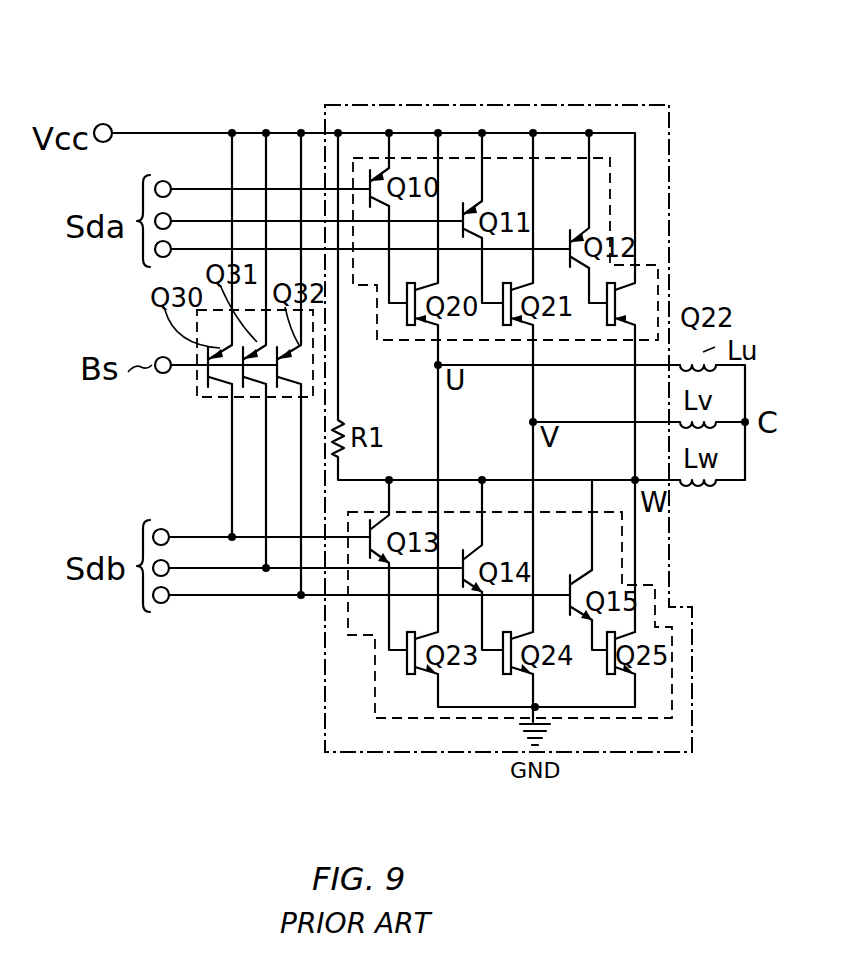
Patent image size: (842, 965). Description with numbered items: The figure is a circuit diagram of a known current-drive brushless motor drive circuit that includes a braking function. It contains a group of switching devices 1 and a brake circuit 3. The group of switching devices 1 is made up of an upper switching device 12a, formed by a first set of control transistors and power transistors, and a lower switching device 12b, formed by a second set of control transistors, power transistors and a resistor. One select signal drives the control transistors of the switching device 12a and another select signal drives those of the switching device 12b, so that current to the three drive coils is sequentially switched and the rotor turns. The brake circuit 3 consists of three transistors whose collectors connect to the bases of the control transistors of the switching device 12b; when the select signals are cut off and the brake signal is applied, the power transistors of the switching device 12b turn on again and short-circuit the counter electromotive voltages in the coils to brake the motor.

The group of switching devices 1 is at (658, 103).
The brake circuit 3 is at (210, 400).
The switching device 12a is at (660, 293).
The switching device 12b is at (673, 680).